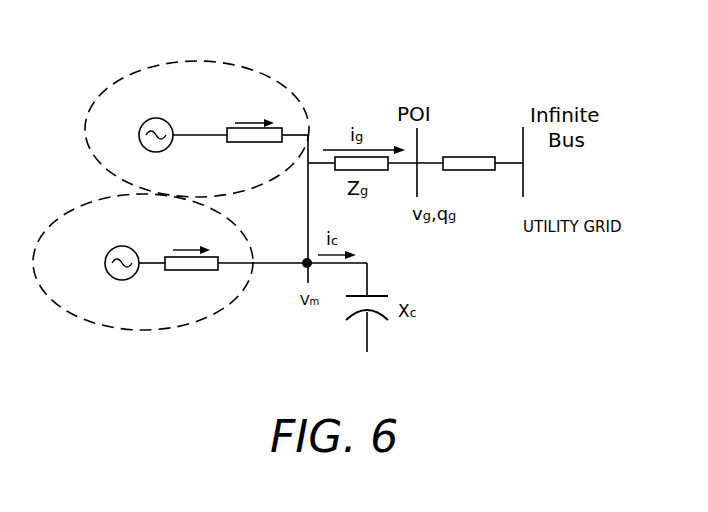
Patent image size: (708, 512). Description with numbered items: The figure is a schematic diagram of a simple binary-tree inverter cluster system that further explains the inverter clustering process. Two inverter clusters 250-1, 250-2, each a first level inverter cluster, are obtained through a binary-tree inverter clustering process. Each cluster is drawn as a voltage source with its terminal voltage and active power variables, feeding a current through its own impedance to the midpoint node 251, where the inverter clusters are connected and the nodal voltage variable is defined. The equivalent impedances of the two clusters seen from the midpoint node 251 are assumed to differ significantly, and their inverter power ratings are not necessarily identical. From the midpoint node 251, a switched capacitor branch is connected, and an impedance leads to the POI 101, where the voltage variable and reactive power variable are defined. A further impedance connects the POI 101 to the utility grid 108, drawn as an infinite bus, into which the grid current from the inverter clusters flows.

The inverter cluster 250-1 is at (227, 62).
The inverter cluster 250-2 is at (157, 330).
The POI 101 is at (418, 140).
The utility grid 108 is at (523, 180).
The midpoint node 251 is at (305, 265).